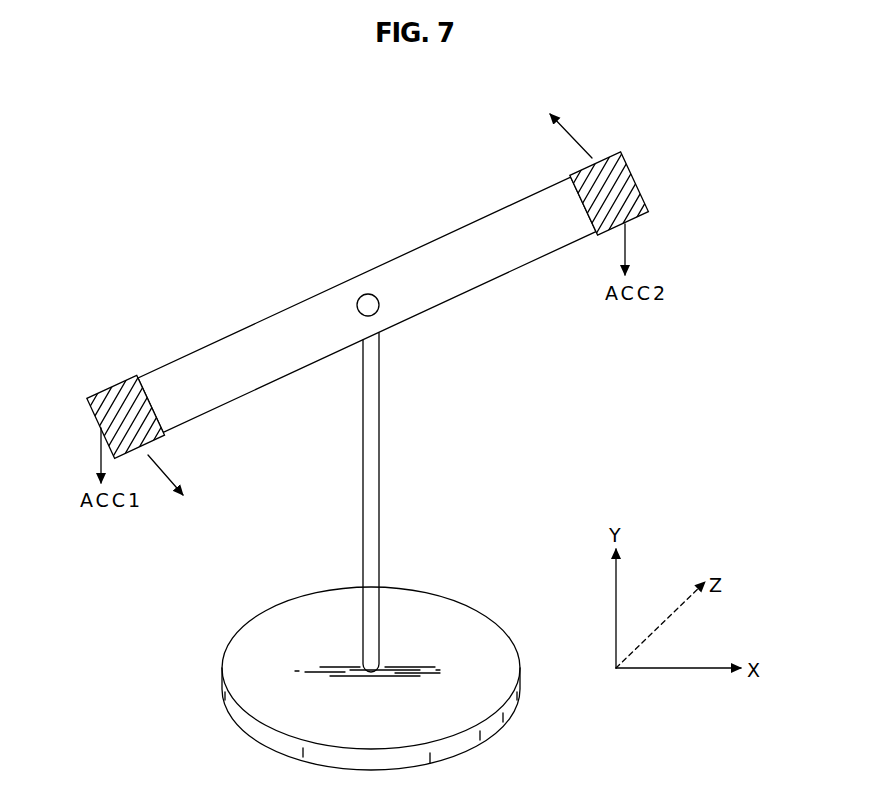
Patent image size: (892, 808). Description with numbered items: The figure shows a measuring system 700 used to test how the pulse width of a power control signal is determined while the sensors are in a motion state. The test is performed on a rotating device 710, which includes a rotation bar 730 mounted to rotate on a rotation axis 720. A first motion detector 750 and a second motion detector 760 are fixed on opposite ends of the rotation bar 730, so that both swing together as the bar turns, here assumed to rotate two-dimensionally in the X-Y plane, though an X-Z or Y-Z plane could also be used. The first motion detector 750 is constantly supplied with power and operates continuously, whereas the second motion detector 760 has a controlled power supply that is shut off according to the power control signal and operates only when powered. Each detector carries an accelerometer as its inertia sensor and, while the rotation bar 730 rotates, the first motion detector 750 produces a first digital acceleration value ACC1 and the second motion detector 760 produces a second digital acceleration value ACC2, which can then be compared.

The measuring system 700 is at (176, 177).
The rotating device 710 is at (378, 484).
The rotation axis 720 is at (368, 305).
The rotation bar 730 is at (485, 282).
The first motion detector 750 is at (112, 391).
The second motion detector 760 is at (640, 176).